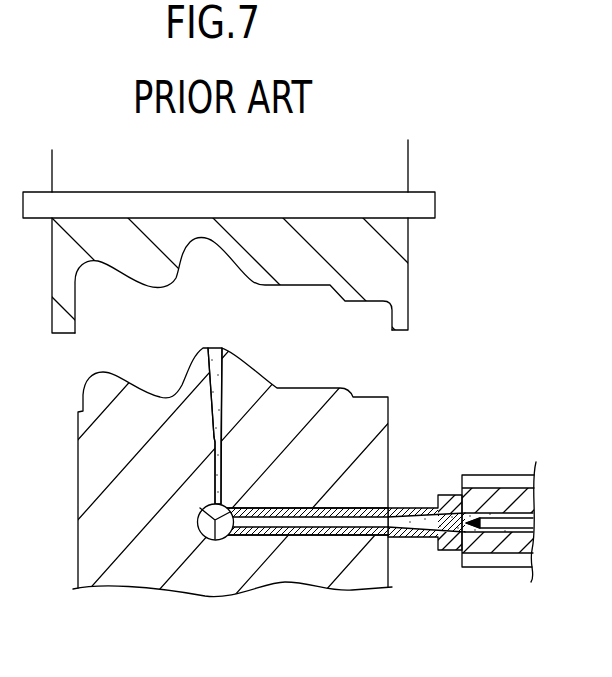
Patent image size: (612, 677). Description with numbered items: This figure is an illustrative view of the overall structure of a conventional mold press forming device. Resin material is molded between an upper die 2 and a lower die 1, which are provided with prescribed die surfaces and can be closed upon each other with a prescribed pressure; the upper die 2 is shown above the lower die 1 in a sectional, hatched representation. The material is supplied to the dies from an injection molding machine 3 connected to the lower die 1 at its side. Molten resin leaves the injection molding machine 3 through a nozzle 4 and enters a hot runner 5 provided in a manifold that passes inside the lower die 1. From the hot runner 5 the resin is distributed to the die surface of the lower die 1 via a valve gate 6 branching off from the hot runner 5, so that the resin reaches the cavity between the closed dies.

The lower die 1 is at (360, 428).
The upper die 2 is at (398, 282).
The injection molding machine 3 is at (498, 497).
The nozzle 4 is at (390, 510).
The hot runner 5 is at (297, 536).
The valve gate 6 is at (200, 530).